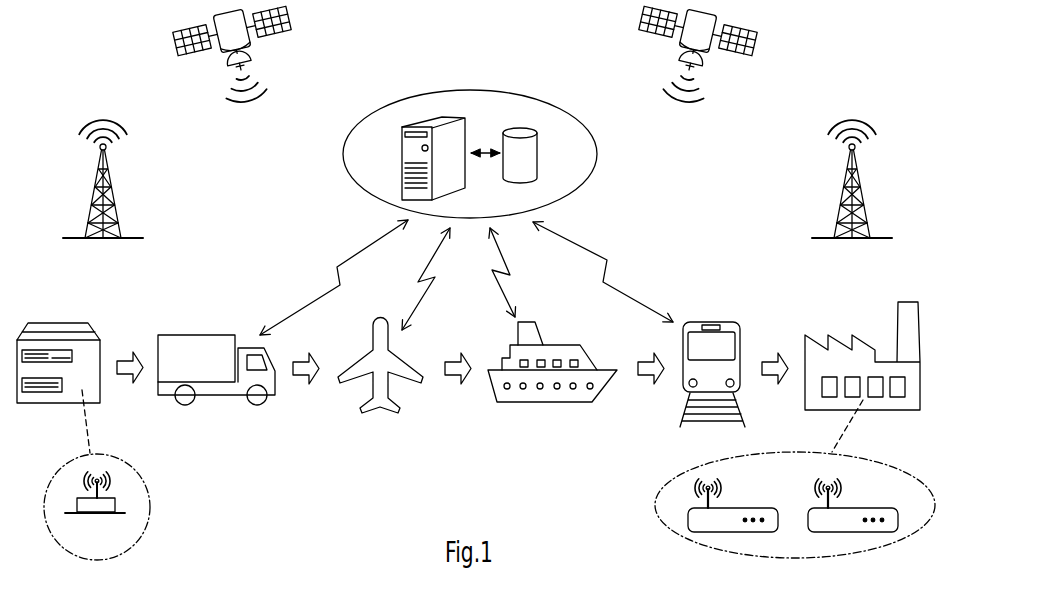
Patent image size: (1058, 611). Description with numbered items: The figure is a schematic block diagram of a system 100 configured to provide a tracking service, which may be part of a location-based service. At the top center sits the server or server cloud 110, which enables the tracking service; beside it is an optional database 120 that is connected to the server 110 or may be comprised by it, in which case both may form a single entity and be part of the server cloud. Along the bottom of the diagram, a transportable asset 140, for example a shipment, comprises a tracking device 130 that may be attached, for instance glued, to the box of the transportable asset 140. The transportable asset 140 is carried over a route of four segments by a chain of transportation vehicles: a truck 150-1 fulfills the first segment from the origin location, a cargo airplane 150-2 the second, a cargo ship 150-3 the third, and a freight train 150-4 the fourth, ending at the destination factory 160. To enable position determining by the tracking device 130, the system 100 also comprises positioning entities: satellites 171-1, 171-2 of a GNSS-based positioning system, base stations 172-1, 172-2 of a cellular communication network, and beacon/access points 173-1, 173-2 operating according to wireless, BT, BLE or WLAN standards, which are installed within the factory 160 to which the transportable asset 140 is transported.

The system 100 is at (870, 58).
The server or server cloud 110 is at (402, 152).
The database 120 is at (540, 150).
The tracking device 130 is at (98, 515).
The transportable asset 140 is at (53, 322).
The truck 150-1 is at (197, 335).
The cargo airplane 150-2 is at (373, 338).
The cargo ship 150-3 is at (558, 343).
The freight train 150-4 is at (712, 322).
The factory 160 is at (843, 335).
The satellite 171-1 is at (178, 42).
The satellite 171-2 is at (757, 45).
The base station 172-1 is at (92, 205).
The base station 172-2 is at (865, 203).
The beacon/access point 173-1 is at (748, 508).
The beacon/access point 173-2 is at (868, 508).